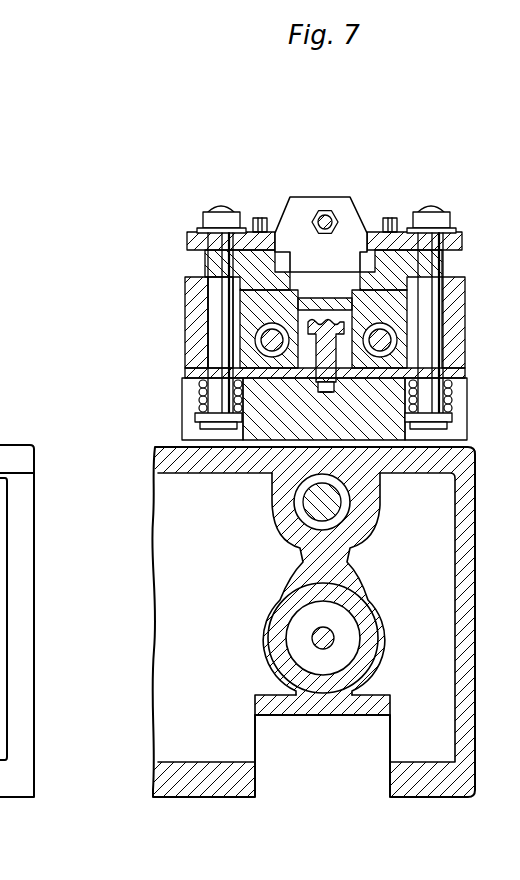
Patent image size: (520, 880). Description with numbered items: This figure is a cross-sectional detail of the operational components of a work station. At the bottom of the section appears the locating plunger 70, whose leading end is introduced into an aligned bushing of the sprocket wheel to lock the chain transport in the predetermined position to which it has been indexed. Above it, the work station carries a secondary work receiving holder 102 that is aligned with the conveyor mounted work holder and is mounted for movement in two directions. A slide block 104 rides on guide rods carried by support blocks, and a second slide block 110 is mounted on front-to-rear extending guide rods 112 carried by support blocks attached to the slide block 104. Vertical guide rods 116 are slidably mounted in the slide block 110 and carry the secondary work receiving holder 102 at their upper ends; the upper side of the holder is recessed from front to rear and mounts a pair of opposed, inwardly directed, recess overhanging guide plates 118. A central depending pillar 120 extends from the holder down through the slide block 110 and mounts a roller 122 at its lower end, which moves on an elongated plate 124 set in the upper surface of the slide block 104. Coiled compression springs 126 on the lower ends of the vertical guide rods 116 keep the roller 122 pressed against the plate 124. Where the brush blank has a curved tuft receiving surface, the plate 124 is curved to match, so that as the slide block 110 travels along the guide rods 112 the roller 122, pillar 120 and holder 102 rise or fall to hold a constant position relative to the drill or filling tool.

The locating plunger 70 is at (342, 625).
The secondary work receiving holder 102 is at (450, 250).
The slide block 104 is at (385, 430).
The slide block 110 is at (400, 360).
The front-to-rear extending guide rods 112 is at (400, 323).
The vertical guide rods 116 is at (433, 332).
The guide plates 118 is at (372, 235).
The central depending pillar 120 is at (318, 312).
The roller 122 is at (220, 357).
The elongated plate 124 is at (325, 390).
The coiled compression springs 126 is at (447, 388).